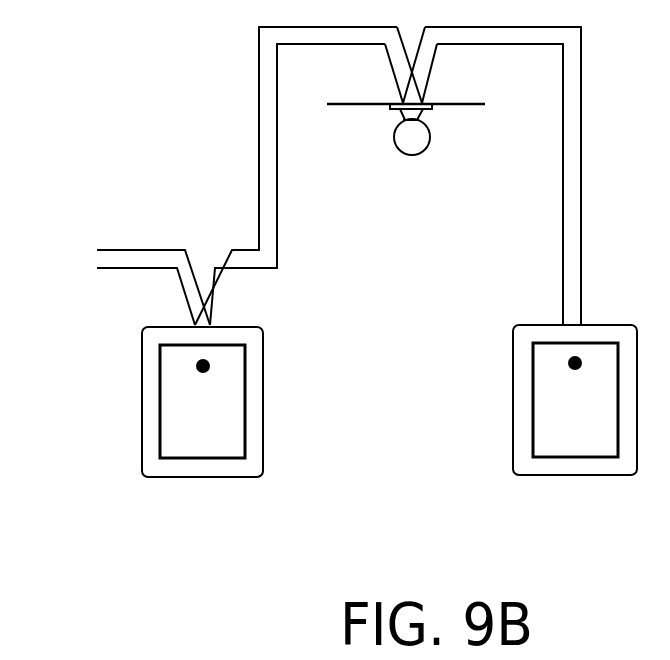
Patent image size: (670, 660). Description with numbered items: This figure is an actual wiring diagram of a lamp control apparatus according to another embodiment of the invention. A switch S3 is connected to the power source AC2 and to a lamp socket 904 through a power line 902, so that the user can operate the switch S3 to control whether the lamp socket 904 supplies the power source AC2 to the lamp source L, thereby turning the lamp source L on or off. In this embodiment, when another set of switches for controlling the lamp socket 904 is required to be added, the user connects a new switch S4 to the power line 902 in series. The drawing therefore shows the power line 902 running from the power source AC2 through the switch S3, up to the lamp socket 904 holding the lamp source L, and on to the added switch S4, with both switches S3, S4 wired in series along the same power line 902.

The power line 902 is at (269, 68).
The lamp socket 904 is at (427, 110).
The lamp source L is at (415, 145).
The power source AC2 is at (118, 282).
The switch S3 is at (202, 402).
The new switch S4 is at (575, 400).